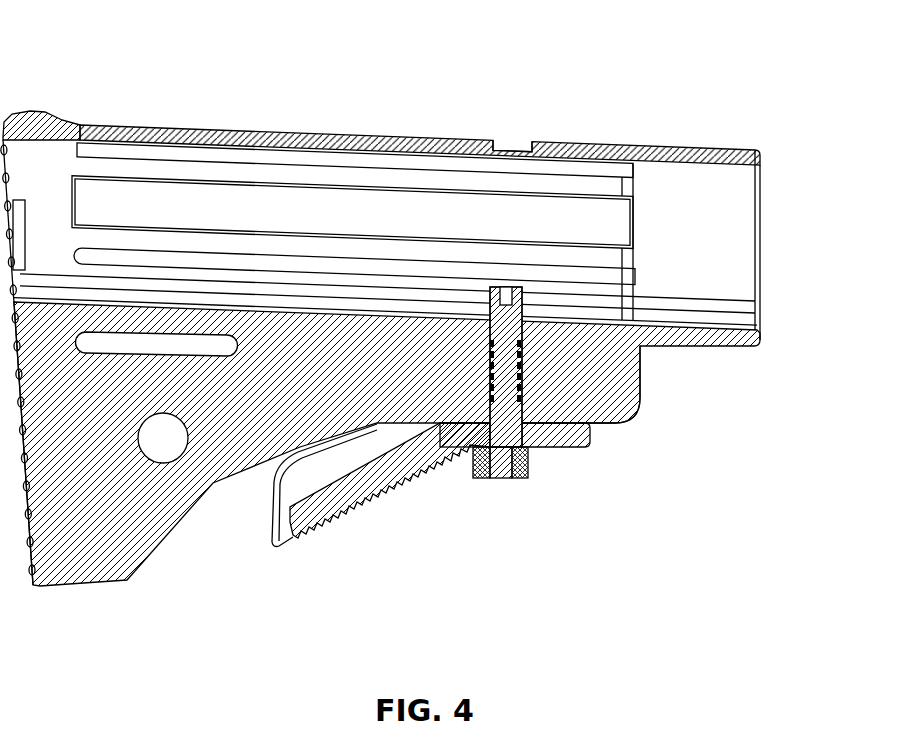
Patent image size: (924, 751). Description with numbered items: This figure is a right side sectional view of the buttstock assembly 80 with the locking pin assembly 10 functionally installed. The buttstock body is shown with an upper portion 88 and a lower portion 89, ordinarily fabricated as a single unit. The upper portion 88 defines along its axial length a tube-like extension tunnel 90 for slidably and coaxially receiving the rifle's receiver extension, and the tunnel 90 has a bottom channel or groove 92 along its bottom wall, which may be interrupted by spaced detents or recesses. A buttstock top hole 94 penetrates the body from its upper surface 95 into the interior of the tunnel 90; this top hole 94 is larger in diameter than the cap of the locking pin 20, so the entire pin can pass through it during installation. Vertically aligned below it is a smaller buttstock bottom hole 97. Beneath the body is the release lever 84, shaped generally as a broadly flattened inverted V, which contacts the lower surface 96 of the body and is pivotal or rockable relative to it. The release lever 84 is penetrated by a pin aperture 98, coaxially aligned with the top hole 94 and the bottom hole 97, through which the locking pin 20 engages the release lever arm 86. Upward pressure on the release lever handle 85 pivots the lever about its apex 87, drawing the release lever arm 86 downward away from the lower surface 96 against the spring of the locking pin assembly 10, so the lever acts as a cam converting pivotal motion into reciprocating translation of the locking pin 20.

The buttstock assembly 80 is at (133, 48).
The upper portion 88 is at (155, 165).
The upper surface 95 is at (340, 133).
The buttstock top hole 94 is at (512, 146).
The buttstock bottom hole 97 is at (523, 290).
The extension tunnel 90 is at (727, 198).
The bottom channel or groove 92 is at (727, 309).
The lower surface 96 is at (565, 422).
The pin aperture 98 is at (524, 450).
The release lever arm 86 is at (565, 448).
The apex 87 is at (447, 440).
The locking pin assembly 10 is at (502, 505).
The locking pin 20 is at (505, 320).
The release lever handle 85 is at (323, 525).
The release lever 84 is at (265, 503).
The lower portion 89 is at (72, 542).